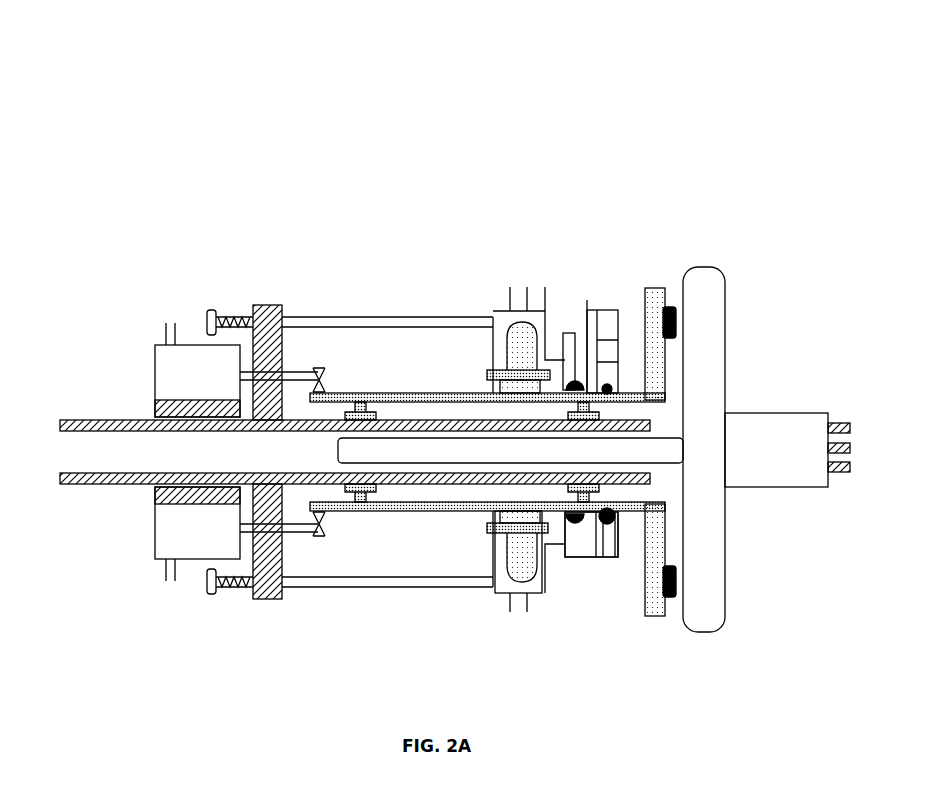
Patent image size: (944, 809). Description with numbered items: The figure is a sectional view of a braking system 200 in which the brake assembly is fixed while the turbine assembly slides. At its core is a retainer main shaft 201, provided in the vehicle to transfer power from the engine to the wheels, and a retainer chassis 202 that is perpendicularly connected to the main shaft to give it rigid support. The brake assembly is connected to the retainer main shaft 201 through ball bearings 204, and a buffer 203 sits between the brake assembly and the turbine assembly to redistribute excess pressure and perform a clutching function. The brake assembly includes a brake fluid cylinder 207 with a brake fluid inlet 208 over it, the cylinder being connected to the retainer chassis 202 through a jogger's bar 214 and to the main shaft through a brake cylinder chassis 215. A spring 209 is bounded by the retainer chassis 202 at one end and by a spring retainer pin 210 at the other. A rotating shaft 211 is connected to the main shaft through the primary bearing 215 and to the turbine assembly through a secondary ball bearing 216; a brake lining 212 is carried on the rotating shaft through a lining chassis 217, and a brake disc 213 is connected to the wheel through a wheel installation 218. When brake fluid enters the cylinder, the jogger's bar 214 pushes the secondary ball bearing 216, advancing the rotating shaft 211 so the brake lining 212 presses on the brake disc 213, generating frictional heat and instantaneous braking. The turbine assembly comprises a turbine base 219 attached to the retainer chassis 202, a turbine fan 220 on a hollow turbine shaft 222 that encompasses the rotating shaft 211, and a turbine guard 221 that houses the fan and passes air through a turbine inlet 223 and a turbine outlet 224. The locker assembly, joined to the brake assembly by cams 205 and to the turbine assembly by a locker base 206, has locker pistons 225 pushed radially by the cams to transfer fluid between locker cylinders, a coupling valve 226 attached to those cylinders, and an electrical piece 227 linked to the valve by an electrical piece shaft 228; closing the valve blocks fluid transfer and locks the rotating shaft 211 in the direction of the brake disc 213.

The braking system 200 is at (676, 106).
The retainer main shaft 201 is at (73, 485).
The retainer chassis 202 is at (270, 305).
The buffer 203 is at (503, 516).
The ball bearings 204 is at (368, 500).
The cams 205 is at (606, 522).
The locker base 206 is at (550, 545).
The brake fluid cylinder 207 is at (156, 372).
The brake fluid inlet 208 is at (165, 333).
The spring 209 is at (235, 315).
The spring retainer pin 210 is at (213, 310).
The rotating shaft 211 is at (430, 393).
The brake lining 212 is at (675, 300).
The brake disc 213 is at (727, 300).
The jogger's bar 214 is at (300, 373).
The brake cylinder chassis 215 is at (160, 490).
The secondary ball bearing 216 is at (325, 378).
The lining chassis 217 is at (655, 290).
The wheel installation 218 is at (845, 413).
The turbine base 219 is at (395, 316).
The turbine fan 220 is at (507, 328).
The turbine guard 221 is at (546, 300).
The turbine shaft 222 is at (487, 532).
The turbine inlet 223 is at (527, 300).
The turbine outlet 224 is at (520, 612).
The locker piston 225 is at (578, 350).
The coupling valve 226 is at (593, 300).
The electrical piece 227 is at (618, 305).
The electrical piece shaft 228 is at (600, 300).